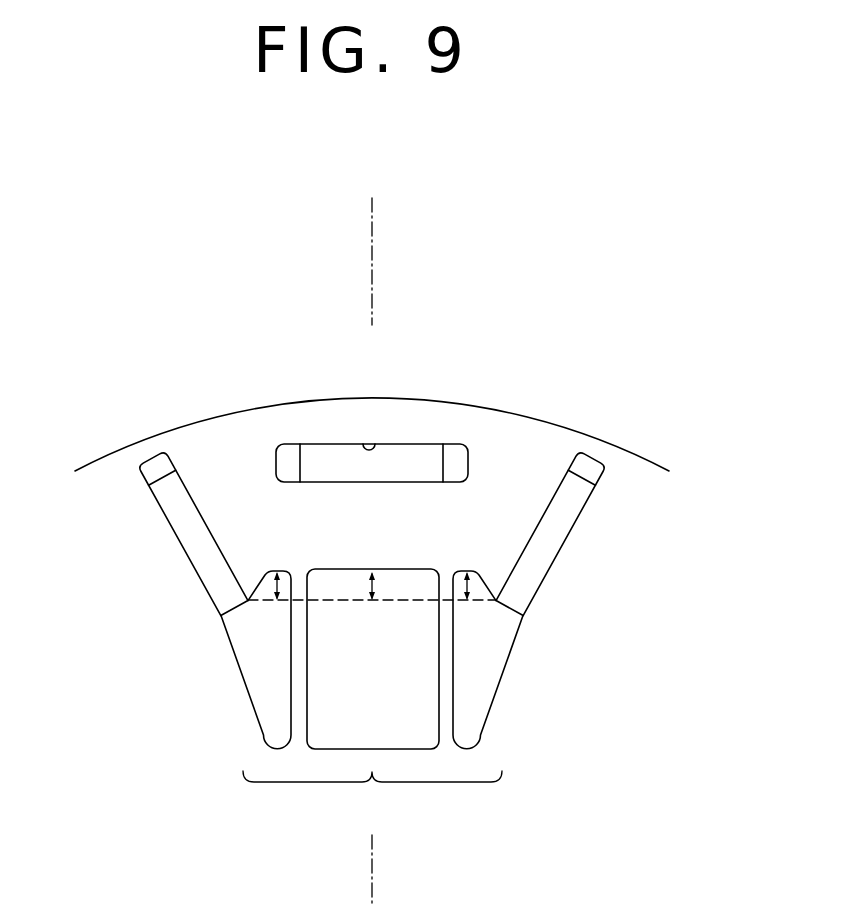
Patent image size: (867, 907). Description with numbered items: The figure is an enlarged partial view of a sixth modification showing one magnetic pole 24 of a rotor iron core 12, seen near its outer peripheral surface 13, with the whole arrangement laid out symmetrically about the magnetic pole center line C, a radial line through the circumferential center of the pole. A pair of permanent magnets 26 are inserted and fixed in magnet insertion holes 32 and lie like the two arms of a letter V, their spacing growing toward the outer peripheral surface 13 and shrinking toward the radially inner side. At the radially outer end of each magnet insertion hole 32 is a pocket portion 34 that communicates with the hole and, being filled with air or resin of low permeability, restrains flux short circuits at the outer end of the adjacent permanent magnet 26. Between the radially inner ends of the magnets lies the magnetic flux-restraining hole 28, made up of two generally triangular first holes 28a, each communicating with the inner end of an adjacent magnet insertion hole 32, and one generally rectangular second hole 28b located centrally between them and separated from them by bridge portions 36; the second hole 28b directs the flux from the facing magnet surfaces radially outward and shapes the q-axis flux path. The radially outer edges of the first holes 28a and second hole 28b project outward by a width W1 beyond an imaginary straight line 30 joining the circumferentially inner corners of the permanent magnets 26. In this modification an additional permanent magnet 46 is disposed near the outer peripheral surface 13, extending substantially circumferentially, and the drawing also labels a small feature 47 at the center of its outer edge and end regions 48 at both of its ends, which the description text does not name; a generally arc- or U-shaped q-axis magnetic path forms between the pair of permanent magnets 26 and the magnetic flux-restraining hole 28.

The rotor iron core 12 is at (250, 397).
The outer peripheral surface 13 is at (333, 399).
The magnetic pole 24 is at (485, 410).
The permanent magnets 26 is at (222, 550).
The magnetic flux-restraining hole 28 is at (372, 798).
The first holes 28a is at (372, 660).
The second hole 28b is at (373, 659).
The imaginary straight line 30 is at (398, 602).
The magnet insertion holes 32 is at (187, 548).
The pocket portion 34 is at (152, 466).
The bridge portions 36 is at (297, 718).
The permanent magnet 46 is at (397, 443).
The recess 47 is at (363, 443).
The end portion 48 is at (455, 455).
The width W1 is at (283, 572).
The magnetic pole center line C is at (371, 250).